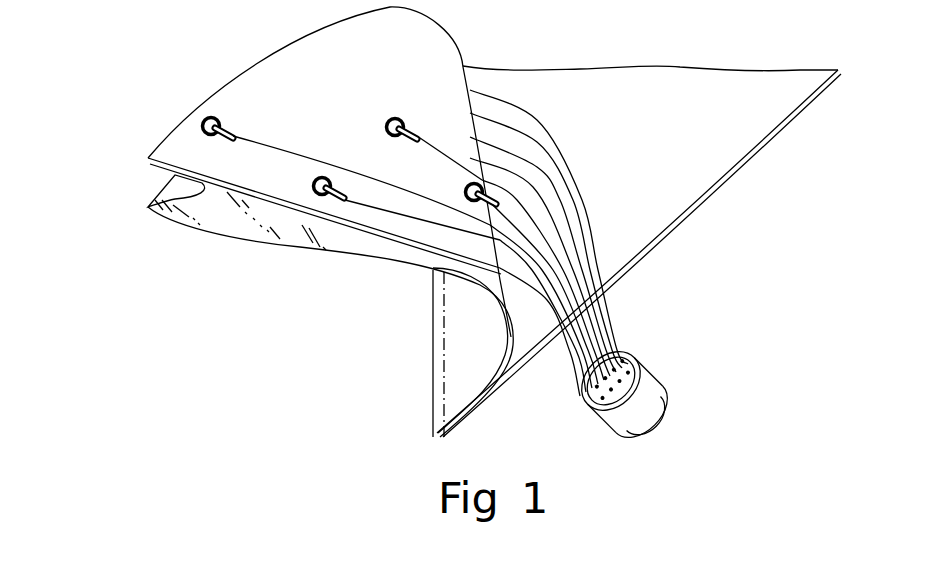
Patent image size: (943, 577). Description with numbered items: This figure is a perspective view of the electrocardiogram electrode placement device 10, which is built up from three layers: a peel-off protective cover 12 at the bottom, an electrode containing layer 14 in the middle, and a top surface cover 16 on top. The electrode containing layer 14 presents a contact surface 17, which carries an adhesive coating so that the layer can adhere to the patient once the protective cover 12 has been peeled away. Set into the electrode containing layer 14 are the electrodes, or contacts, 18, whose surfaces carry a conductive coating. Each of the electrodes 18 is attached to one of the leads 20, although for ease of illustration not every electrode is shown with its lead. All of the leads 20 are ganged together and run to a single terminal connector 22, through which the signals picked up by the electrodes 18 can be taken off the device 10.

The electrocardiogram (EKG) electrode placement device 10 is at (738, 264).
The peel-off protective cover 12 is at (230, 217).
The electrode containing layer 14 is at (273, 73).
The top surface cover 16 is at (717, 95).
The contact surface 17 is at (148, 207).
The electrodes 18 is at (320, 197).
The leads 20 is at (612, 318).
The terminal connector 22 is at (652, 377).